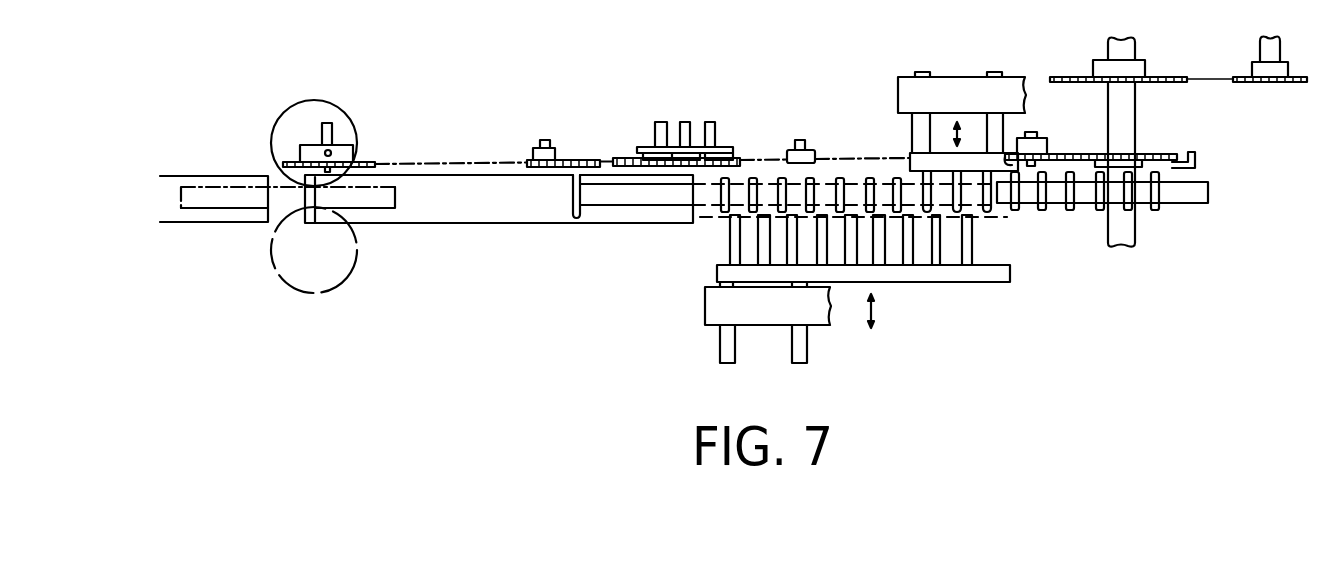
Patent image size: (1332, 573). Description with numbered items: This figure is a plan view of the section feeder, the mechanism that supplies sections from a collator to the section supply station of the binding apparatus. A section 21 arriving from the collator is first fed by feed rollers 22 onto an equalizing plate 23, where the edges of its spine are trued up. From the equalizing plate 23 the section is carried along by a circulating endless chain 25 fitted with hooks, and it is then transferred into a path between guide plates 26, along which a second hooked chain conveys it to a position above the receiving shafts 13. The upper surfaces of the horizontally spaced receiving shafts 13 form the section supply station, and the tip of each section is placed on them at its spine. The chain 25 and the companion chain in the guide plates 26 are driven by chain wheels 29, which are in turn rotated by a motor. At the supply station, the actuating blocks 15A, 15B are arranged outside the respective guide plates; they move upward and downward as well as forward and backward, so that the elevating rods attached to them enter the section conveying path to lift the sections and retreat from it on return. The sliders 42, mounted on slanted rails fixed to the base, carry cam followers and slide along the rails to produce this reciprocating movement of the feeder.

The receiving shafts 13 is at (843, 178).
The actuating block 15A is at (963, 282).
The actuating block 15B is at (1155, 210).
The section 21 is at (217, 200).
The feed rollers 22 is at (338, 123).
The equalizing plate 23 is at (440, 205).
The circulating endless chain 25 is at (416, 162).
The guide plates 26 is at (640, 147).
The chain wheels 29 is at (1172, 76).
The sliders 42 is at (957, 85).